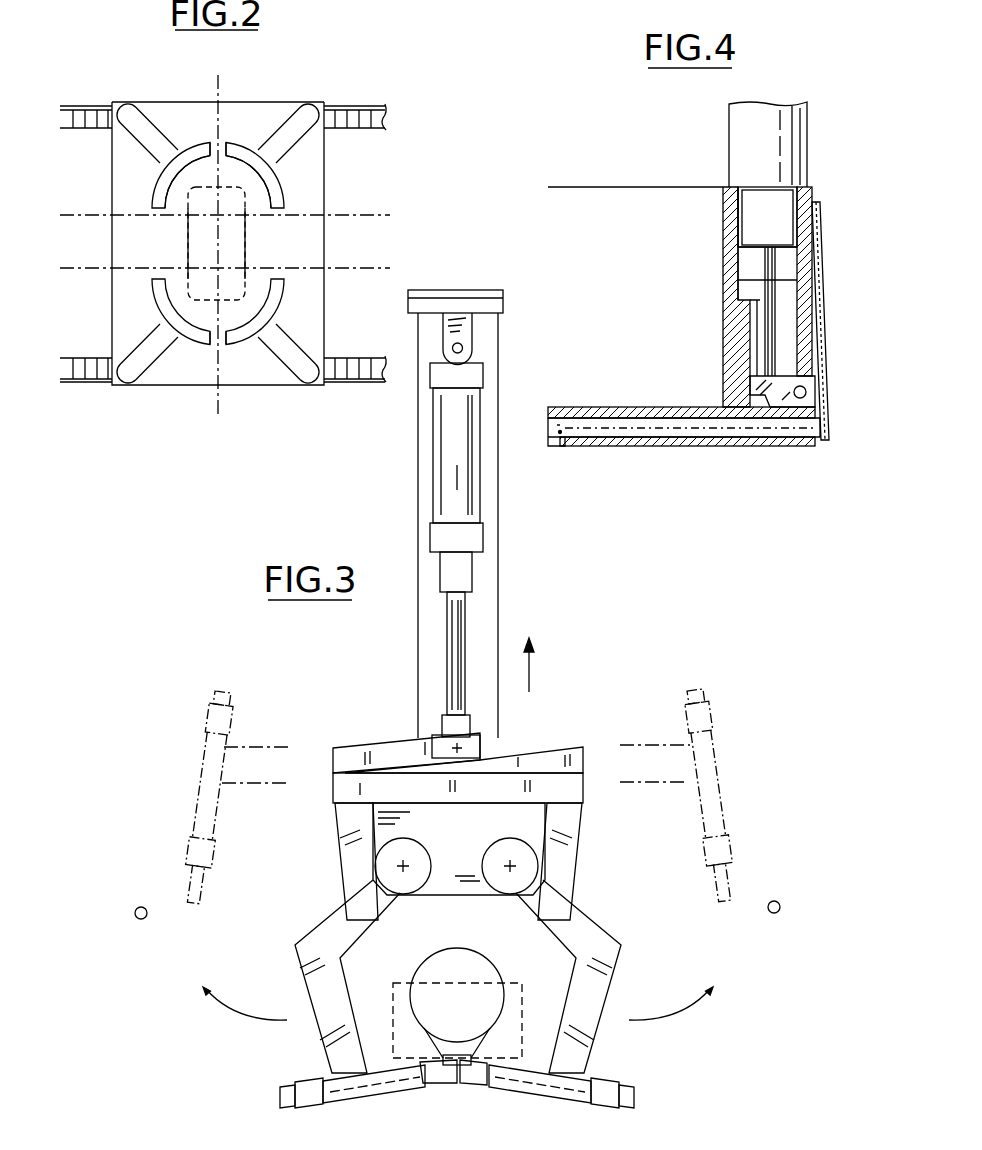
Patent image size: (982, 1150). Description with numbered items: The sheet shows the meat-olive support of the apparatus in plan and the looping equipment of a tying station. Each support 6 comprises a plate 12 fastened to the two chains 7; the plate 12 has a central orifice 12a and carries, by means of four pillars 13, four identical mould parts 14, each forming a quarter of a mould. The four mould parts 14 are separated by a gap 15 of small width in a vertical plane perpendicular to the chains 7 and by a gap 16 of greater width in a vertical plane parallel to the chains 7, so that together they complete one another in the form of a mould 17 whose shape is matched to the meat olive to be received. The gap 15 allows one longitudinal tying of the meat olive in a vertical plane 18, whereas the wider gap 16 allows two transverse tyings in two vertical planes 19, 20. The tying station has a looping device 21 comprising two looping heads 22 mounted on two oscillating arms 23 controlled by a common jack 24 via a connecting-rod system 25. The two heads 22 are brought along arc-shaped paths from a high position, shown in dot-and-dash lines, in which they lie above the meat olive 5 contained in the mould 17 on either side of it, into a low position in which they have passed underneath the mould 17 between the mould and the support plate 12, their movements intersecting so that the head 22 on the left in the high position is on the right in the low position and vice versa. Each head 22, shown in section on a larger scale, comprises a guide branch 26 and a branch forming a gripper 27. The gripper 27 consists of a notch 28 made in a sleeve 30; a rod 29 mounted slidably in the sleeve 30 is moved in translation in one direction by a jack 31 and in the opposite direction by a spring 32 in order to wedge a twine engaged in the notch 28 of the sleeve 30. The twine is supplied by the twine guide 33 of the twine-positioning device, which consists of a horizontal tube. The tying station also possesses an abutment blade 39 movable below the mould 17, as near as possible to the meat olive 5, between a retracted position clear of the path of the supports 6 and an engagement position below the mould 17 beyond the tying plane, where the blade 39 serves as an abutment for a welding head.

In FIG. 3, the meat olive 5 is at (463, 973).
In FIG. 2, the support 6 is at (263, 98).
In FIG. 2, the chains 7 is at (362, 120).
In FIG. 2, the plate 12 is at (130, 167).
In FIG. 2, the central orifice 12a is at (187, 250).
In FIG. 2, the pillars 13 is at (135, 128).
In FIG. 2, the mould parts 14 is at (158, 192).
In FIG. 2, the gap 15 is at (222, 152).
In FIG. 2, the gap 16 is at (150, 243).
In FIG. 2, the mould 17 is at (292, 194).
In FIG. 3, the mould 17 is at (392, 997).
In FIG. 2, the vertical plane 18 is at (215, 88).
In FIG. 2, the vertical plane 19 is at (364, 218).
In FIG. 2, the vertical plane 20 is at (352, 270).
In FIG. 3, the looping device 21 is at (521, 596).
In FIG. 4, the looping heads 22 is at (825, 266).
In FIG. 3, the looping heads 22 is at (200, 898).
In FIG. 3, the oscillating arms 23 is at (330, 998).
In FIG. 3, the jack 24 is at (452, 463).
In FIG. 3, the connecting-rod system 25 is at (551, 734).
In FIG. 4, the guide branch 26 is at (628, 200).
In FIG. 4, the gripper 27 is at (661, 452).
In FIG. 4, the notch 28 is at (560, 434).
In FIG. 4, the rod 29 is at (656, 428).
In FIG. 4, the sleeve 30 is at (603, 408).
In FIG. 4, the jack 31 is at (752, 140).
In FIG. 3, the jack 31 is at (372, 1082).
In FIG. 4, the spring 32 is at (822, 385).
In FIG. 3, the twine guide 33 is at (137, 919).
In FIG. 3, the abutment blade 39 is at (457, 1052).